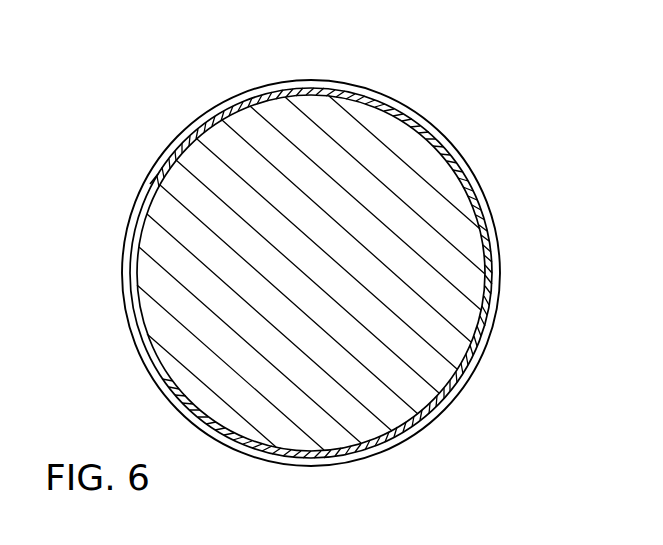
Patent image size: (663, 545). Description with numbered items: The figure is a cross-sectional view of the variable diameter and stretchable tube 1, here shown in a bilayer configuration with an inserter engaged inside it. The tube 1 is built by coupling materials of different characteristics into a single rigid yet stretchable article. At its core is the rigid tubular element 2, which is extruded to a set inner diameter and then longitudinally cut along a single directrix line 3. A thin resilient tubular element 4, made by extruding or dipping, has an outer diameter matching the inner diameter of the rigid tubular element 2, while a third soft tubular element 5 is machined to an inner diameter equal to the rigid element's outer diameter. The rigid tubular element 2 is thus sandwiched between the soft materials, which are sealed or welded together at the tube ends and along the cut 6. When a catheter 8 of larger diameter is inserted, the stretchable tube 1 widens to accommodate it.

The variable diameter and stretchable tube 1 is at (523, 154).
The rigid tubular element 2 is at (290, 95).
The directrix line 3 is at (148, 182).
The tubular element of thin thickness 4 is at (417, 133).
The soft tubular element 5 is at (360, 90).
The cut 6 is at (132, 275).
The catheter 8 is at (445, 262).